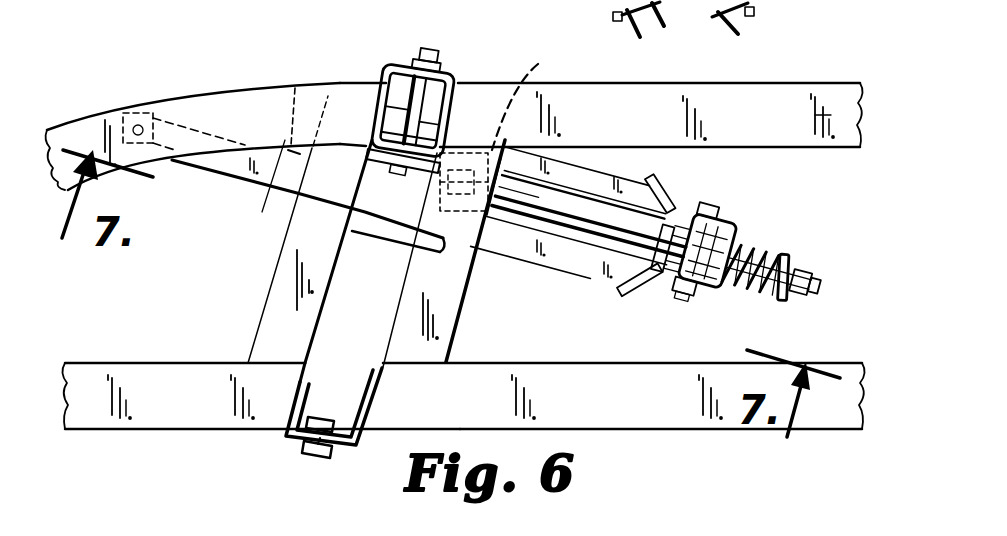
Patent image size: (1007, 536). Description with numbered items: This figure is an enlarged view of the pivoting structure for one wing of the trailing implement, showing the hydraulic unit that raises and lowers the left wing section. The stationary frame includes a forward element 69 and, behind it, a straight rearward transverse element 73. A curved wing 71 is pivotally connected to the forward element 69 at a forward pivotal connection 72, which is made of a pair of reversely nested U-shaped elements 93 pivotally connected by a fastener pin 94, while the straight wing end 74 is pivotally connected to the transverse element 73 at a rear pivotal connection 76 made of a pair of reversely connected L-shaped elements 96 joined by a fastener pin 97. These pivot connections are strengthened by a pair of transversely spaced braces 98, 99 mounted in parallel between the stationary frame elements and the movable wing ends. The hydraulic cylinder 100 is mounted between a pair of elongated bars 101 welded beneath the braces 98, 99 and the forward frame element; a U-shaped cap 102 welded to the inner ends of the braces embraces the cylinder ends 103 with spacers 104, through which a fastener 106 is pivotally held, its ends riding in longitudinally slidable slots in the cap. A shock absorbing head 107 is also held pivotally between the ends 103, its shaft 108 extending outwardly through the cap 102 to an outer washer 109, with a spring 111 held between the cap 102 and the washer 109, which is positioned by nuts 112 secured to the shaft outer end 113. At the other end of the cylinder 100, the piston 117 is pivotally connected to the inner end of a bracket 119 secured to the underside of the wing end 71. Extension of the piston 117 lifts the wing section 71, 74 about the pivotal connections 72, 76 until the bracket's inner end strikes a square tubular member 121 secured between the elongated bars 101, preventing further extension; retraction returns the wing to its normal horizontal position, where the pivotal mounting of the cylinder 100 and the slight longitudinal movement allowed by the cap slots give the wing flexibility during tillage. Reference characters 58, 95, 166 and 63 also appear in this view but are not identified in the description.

The clamp assembly 58 is at (322, 46).
The forward pivotal connection 72 is at (401, 42).
The U-shaped elements 93 is at (388, 66).
The fastener pin 94 is at (438, 46).
The piston 117 is at (534, 97).
The forward element 69 is at (790, 86).
The curved wing 71 is at (115, 112).
The elongated bars 101 is at (295, 97).
The square tubular member 121 is at (276, 158).
The brace 98 is at (292, 262).
The bracket 119 is at (368, 207).
The brace 99 is at (457, 303).
The hydraulic cylinder 100 is at (608, 242).
The bracket plate 95 is at (549, 294).
The U-shaped cap 102 is at (677, 208).
The shock absorbing head 107 is at (658, 275).
The cylinder ends 103 is at (728, 236).
The spacers 104 is at (706, 210).
The fastener 106 is at (686, 300).
The shaft 108 is at (772, 258).
The outer washer 109 is at (798, 265).
The spring 111 is at (771, 297).
The nuts 112 is at (805, 294).
The shaft outer end 113 is at (822, 280).
The straight wing end 74 is at (188, 410).
The rearward transverse element 73 is at (676, 420).
The rear pivotal connection 76 is at (272, 448).
The L-shaped elements 96 is at (291, 446).
The fastener pin 97 is at (320, 456).
The leg 166 is at (613, 15).
The frame member 63 is at (694, 0).